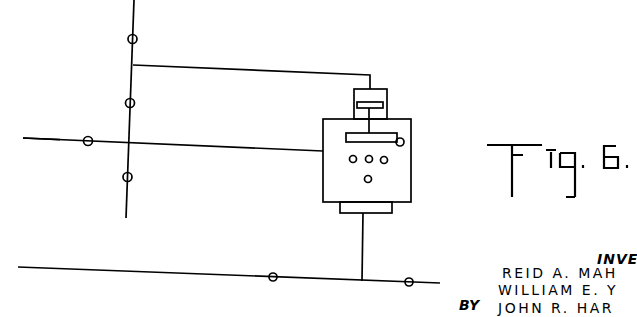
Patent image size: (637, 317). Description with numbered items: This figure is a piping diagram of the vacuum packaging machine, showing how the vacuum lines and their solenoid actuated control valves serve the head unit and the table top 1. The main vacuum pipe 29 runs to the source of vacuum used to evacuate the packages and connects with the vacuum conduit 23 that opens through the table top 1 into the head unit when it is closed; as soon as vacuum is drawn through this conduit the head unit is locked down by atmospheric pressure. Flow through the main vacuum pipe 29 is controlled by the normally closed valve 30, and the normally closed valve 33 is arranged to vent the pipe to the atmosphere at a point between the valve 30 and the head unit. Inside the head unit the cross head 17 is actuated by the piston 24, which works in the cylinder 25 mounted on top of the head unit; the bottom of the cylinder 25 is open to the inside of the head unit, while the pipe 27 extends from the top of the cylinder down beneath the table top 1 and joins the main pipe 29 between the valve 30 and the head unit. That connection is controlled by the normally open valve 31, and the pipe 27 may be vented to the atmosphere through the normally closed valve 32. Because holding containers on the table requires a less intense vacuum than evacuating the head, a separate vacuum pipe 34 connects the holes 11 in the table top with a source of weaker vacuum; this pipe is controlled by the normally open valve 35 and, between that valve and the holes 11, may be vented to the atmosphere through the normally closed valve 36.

The table top 1 is at (393, 190).
The holes 11 is at (388, 160).
The cross head 17 is at (347, 142).
The vacuum conduit 23 is at (404, 140).
The piston 24 is at (383, 107).
The cylinder 25 is at (387, 95).
The pipe 27 is at (258, 70).
The main vacuum pipe 29 is at (50, 140).
The normally closed solenoid actuated valve 30 is at (92, 137).
The normally open solenoid actuated valve 31 is at (134, 101).
The normally closed solenoid actuated valve 32 is at (137, 38).
The normally closed solenoid actuated valve 33 is at (132, 177).
The vacuum pipe 34 is at (363, 242).
The normally open solenoid actuated valve 35 is at (273, 281).
The normally closed solenoid actuated valve 36 is at (411, 278).